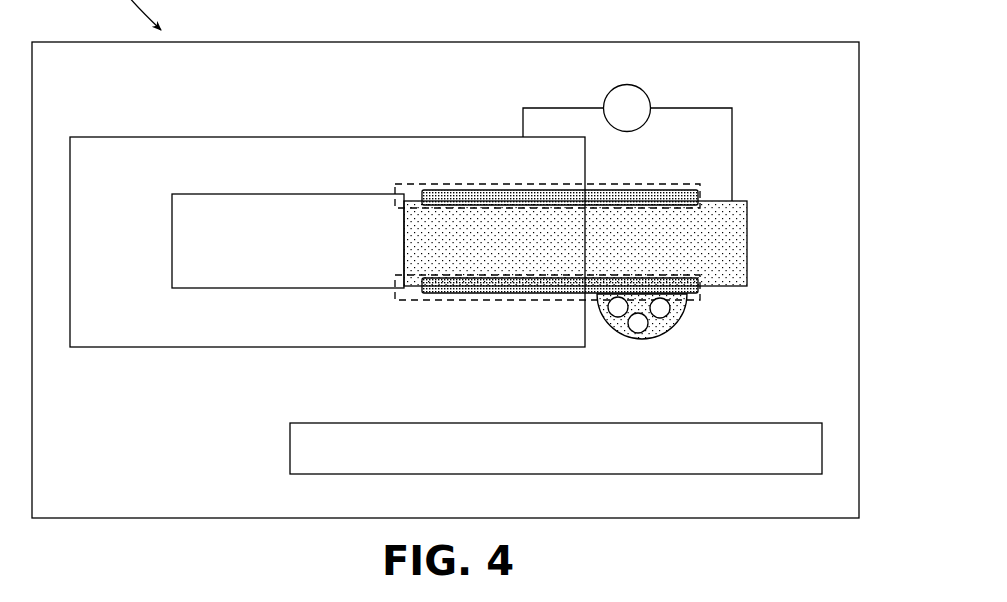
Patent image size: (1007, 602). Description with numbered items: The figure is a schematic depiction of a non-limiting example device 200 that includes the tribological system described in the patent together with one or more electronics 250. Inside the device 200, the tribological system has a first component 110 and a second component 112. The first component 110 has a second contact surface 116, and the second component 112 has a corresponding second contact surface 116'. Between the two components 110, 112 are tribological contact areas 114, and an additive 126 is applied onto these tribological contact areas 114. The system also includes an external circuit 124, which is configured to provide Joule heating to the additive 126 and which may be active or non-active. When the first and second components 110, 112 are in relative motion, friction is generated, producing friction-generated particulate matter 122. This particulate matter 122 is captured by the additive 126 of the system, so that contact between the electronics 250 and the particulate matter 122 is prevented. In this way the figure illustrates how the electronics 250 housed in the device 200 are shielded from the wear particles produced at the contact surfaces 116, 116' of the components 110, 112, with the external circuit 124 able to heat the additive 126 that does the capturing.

The device 200 is at (870, 128).
The first component 110 is at (268, 136).
The tribological contact areas 114 is at (393, 200).
The second component 112 is at (750, 240).
The second contact surface 116 is at (532, 147).
The second contact surface 116' is at (547, 193).
The additive 126 is at (692, 190).
The friction-generated particulate matter 122 is at (657, 335).
The external circuit 124 is at (735, 115).
The electronics 250 is at (288, 448).